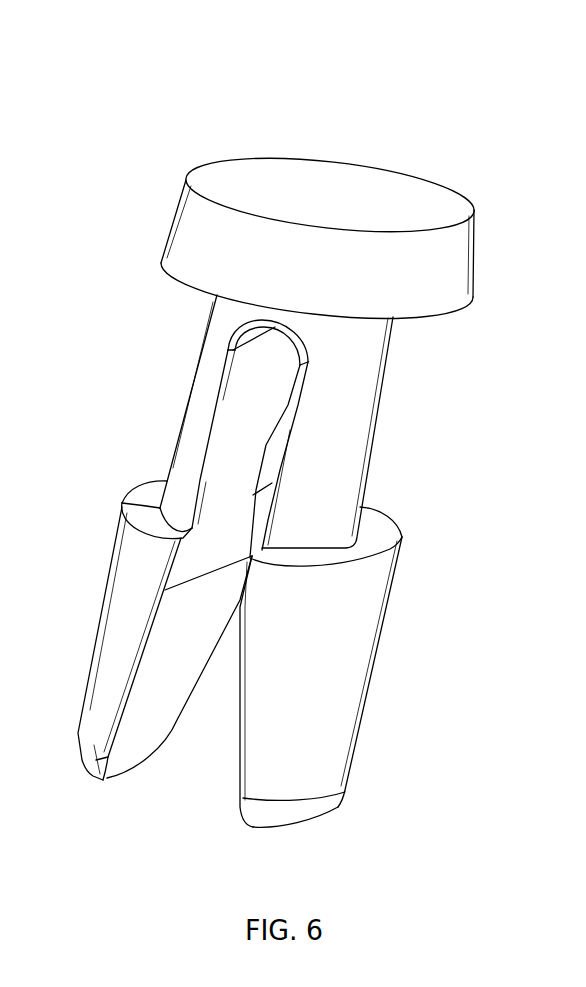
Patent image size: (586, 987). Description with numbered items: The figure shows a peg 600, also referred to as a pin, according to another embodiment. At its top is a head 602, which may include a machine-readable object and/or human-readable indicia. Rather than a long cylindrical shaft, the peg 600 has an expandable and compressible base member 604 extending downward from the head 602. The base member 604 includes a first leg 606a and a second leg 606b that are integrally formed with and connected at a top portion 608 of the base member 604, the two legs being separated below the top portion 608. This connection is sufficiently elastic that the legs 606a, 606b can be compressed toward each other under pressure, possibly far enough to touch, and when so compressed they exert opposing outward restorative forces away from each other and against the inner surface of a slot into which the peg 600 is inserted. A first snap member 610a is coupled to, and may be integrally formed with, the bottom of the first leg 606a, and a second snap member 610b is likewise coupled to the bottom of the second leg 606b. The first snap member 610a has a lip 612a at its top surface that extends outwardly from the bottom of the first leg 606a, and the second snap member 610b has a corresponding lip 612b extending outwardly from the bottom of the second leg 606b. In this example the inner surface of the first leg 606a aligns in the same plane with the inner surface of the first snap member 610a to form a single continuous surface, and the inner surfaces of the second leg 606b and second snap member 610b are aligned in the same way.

The peg 600 is at (477, 78).
The head 602 is at (337, 165).
The base member 604 is at (405, 363).
The first leg 606a is at (193, 435).
The second leg 606b is at (340, 500).
The top portion 608 is at (213, 340).
The first snap member 610a is at (112, 628).
The second snap member 610b is at (354, 704).
The lip 612a is at (140, 500).
The lip 612b is at (392, 542).